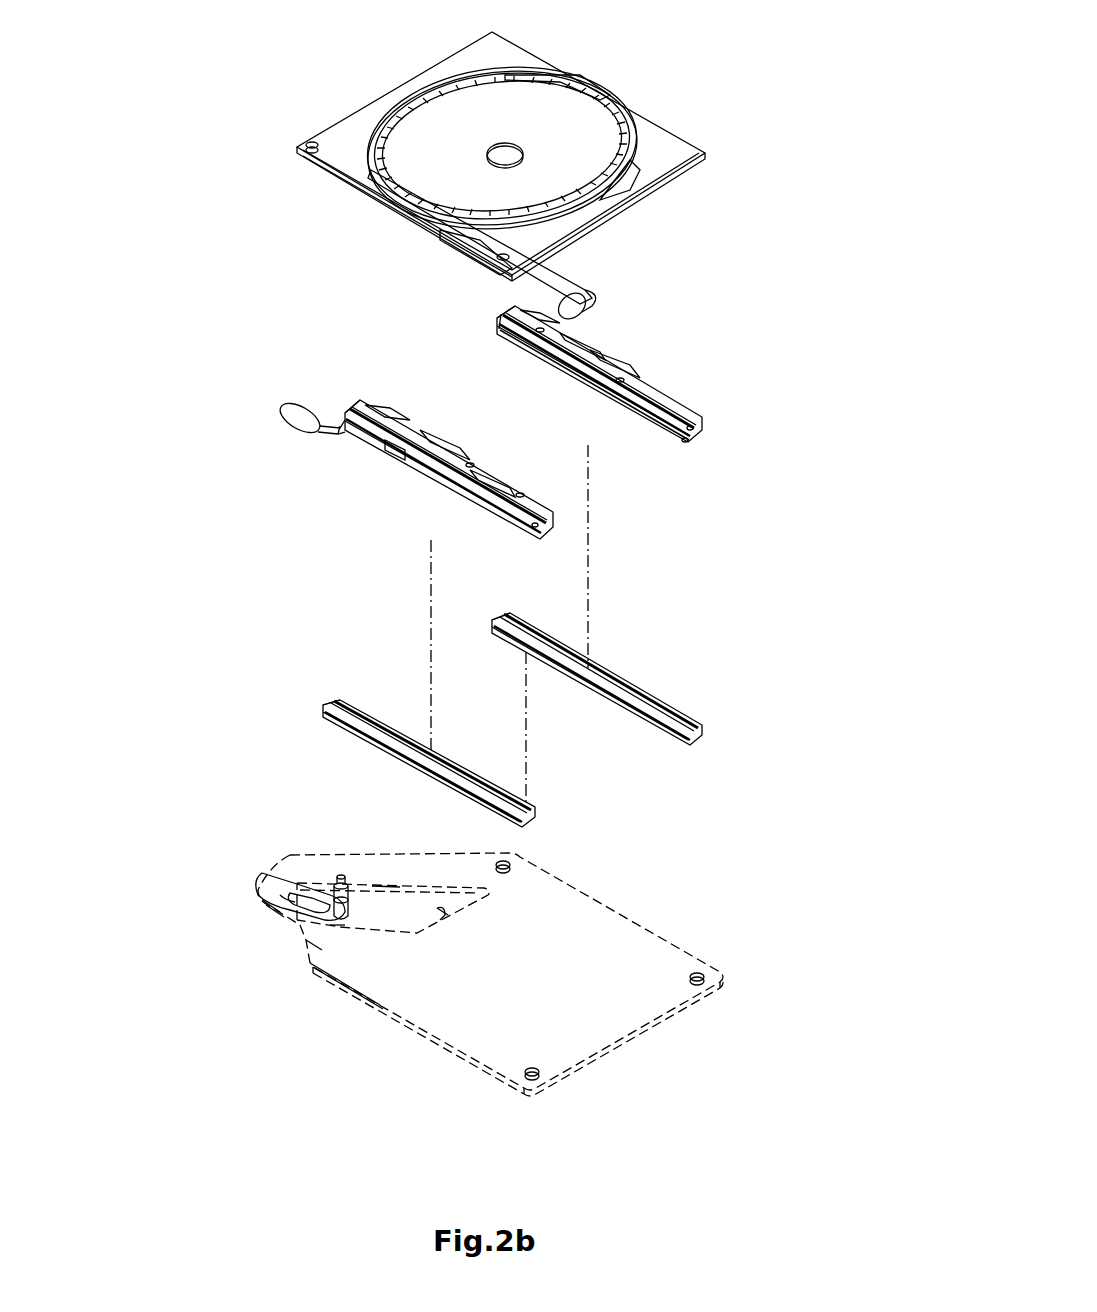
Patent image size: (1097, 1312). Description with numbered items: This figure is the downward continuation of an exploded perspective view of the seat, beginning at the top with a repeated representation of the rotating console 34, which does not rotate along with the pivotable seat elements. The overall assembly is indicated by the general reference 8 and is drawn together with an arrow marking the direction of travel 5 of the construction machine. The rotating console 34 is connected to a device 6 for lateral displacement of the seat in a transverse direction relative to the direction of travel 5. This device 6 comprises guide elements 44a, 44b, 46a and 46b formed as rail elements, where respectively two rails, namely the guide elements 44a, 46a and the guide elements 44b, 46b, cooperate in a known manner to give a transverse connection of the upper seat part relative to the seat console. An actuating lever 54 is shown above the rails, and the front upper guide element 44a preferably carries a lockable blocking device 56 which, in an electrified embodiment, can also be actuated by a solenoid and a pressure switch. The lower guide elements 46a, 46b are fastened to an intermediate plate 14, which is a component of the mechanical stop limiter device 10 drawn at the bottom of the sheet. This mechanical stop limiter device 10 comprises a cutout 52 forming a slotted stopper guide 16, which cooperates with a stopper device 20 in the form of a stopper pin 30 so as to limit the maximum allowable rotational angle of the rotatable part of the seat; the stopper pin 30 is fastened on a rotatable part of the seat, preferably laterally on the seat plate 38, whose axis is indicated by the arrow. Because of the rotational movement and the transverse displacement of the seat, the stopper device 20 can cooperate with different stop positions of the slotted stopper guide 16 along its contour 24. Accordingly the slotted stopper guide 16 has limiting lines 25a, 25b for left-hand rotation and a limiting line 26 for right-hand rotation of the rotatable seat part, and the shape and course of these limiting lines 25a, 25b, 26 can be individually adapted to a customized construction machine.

The seat swivel assembly 8 is at (792, 108).
The direction of travel 5 is at (400, 238).
The rotating console 34 is at (335, 138).
The release lever 54 is at (570, 273).
The guide element 44b is at (636, 380).
The front upper guide element 44a is at (460, 490).
The lockable blocking device 56 is at (330, 432).
The lower guide element 46b is at (605, 680).
The lower guide element 46a is at (380, 717).
The seat plate 38 is at (340, 878).
The intermediate plate 14 is at (558, 979).
The cutout 52 is at (409, 924).
The limiting line 26 is at (380, 885).
The slotted stopper guide 16 is at (307, 918).
The stopper device 20 is at (320, 880).
The stopper pin 30 is at (337, 900).
The limiting line 25a is at (290, 897).
The limiting line 25b is at (367, 930).
The contour 24 is at (443, 910).
The device for lateral displacement 6 is at (806, 737).
The mechanical stop limiter device 10 is at (812, 832).